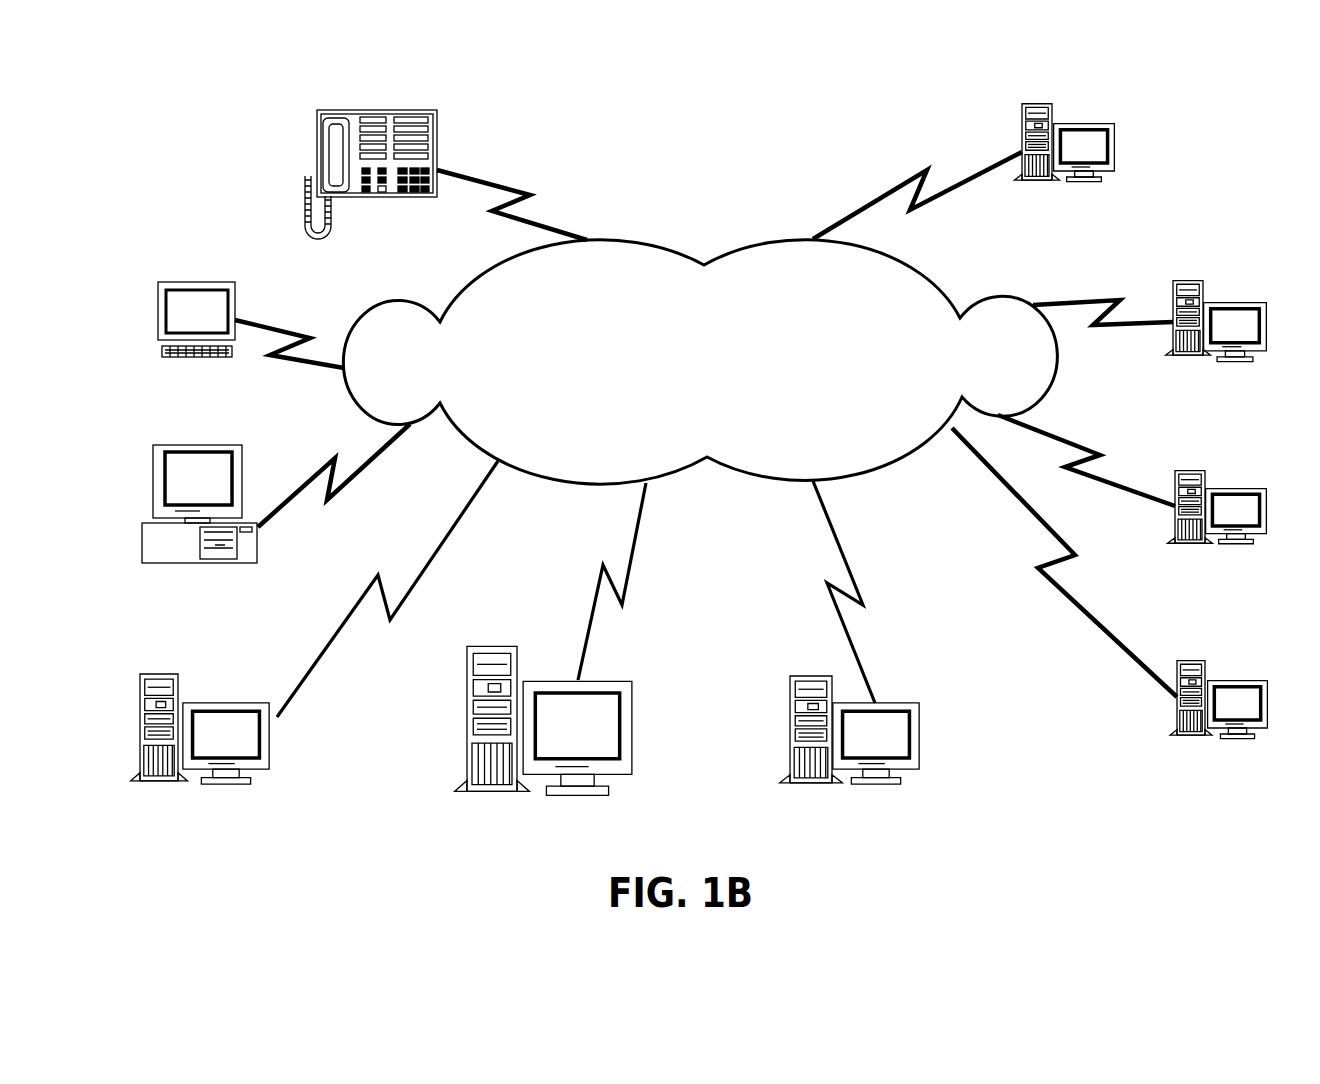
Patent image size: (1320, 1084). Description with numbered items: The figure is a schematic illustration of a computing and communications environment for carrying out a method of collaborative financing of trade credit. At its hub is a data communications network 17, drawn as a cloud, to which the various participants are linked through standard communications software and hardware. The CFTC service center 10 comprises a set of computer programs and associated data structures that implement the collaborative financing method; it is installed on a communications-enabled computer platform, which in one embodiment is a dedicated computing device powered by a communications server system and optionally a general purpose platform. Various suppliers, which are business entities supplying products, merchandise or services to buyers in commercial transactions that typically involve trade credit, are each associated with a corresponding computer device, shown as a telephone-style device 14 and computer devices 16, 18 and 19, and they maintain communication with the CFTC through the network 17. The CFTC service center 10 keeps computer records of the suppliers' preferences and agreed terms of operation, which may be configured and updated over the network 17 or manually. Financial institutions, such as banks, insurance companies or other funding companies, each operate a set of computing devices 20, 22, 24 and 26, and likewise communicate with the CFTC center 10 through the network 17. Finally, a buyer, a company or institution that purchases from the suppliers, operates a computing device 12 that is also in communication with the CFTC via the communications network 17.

The CFTC service center 10 is at (635, 712).
The buyer computing device 12 is at (922, 722).
The supplier computer device 14 is at (437, 126).
The supplier computer device 16 is at (196, 282).
The data communications network 17 is at (643, 242).
The supplier computer device 18 is at (196, 445).
The supplier computer device 19 is at (225, 702).
The financial institution computing device 20 is at (1115, 138).
The financial institution computing device 22 is at (1233, 302).
The financial institution computing device 24 is at (1235, 488).
The financial institution computing device 26 is at (1235, 680).